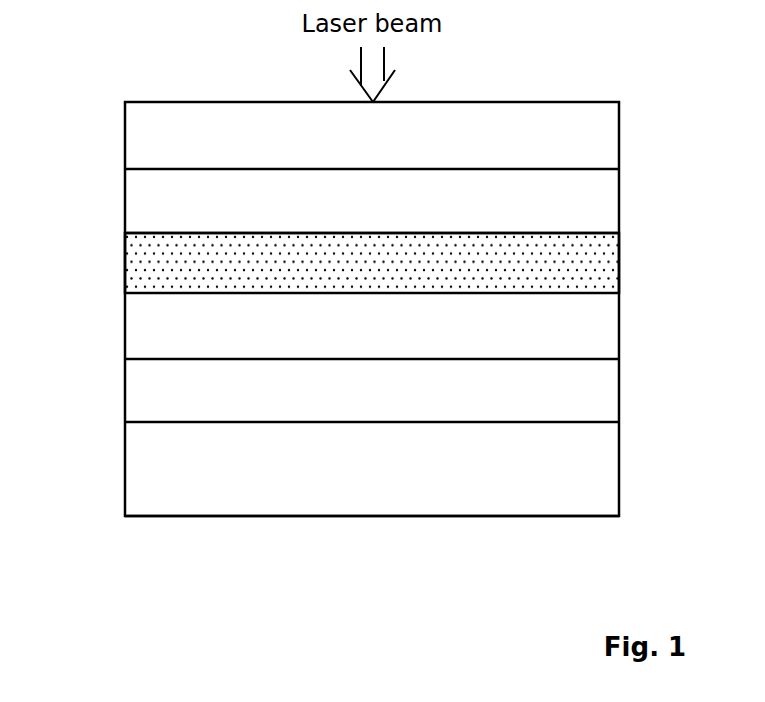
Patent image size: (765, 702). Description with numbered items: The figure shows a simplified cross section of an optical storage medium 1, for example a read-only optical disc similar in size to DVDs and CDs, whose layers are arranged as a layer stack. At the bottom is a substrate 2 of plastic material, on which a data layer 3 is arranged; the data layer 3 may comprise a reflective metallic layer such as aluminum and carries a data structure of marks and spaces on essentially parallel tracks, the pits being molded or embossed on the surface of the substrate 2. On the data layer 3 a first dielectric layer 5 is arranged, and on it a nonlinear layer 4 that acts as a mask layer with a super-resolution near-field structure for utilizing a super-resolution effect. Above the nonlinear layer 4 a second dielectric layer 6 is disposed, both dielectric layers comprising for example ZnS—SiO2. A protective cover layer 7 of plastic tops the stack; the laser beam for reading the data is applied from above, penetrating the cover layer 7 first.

The optical storage medium 1 is at (518, 516).
The substrate 2 is at (135, 475).
The data layer 3 is at (137, 388).
The nonlinear layer 4 is at (137, 267).
The first dielectric layer 5 is at (605, 335).
The second dielectric layer 6 is at (605, 198).
The cover layer 7 is at (137, 137).